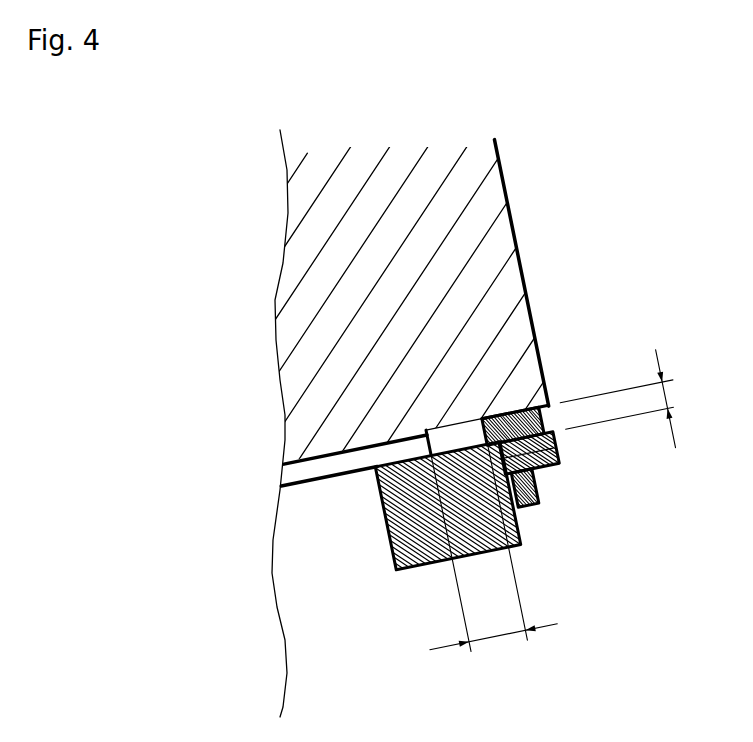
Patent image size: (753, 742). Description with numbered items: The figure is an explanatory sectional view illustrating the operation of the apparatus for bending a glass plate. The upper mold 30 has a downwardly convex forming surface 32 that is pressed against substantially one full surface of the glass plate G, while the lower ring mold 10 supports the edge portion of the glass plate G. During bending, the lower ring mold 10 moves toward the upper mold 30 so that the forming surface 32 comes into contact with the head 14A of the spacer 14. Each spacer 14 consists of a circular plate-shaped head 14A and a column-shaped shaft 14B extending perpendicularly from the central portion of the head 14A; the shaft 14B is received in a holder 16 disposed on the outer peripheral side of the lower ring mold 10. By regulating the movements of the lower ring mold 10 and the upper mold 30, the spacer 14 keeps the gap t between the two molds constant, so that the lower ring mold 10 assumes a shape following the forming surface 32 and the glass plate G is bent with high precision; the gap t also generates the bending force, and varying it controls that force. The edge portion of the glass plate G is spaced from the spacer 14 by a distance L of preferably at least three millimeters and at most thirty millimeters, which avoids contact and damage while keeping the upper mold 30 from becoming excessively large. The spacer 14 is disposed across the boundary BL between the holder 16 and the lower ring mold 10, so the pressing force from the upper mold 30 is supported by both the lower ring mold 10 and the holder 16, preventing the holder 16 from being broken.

The upper mold 30 is at (519, 246).
The forming surface 32 is at (463, 425).
The glass plate G is at (310, 478).
The lower ring mold 10 is at (392, 553).
The spacer 14 is at (566, 431).
The head 14A is at (503, 412).
The shaft 14B is at (528, 505).
The holder 16 is at (549, 466).
The boundary BL is at (553, 448).
The gap t is at (622, 408).
The distance L is at (475, 549).